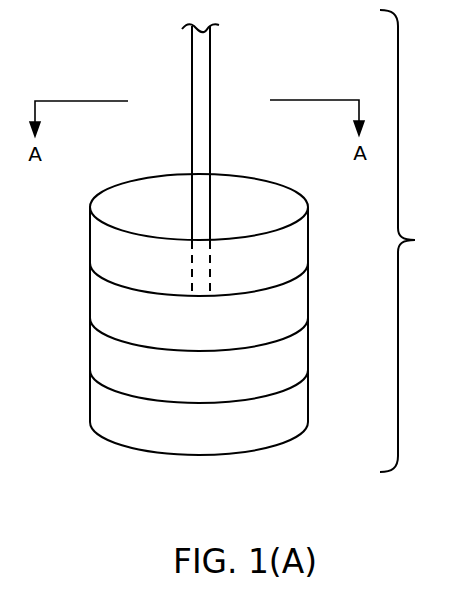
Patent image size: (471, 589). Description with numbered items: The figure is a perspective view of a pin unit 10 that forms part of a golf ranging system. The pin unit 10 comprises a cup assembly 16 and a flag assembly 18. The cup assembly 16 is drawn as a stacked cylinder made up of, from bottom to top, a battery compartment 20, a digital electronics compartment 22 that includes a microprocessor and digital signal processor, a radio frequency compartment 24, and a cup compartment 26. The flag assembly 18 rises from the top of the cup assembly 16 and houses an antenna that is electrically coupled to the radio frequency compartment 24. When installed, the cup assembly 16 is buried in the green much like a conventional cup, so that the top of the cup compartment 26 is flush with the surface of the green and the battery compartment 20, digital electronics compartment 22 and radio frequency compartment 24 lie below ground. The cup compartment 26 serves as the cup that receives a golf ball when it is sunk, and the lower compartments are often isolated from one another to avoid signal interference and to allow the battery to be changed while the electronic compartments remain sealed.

The pin unit 10 is at (413, 241).
The cup assembly 16 is at (262, 180).
The flag assembly 18 is at (210, 62).
The battery compartment 20 is at (308, 398).
The digital electronics compartment 22 is at (308, 346).
The radio frequency (RF) compartment 24 is at (308, 293).
The cup compartment 26 is at (308, 238).